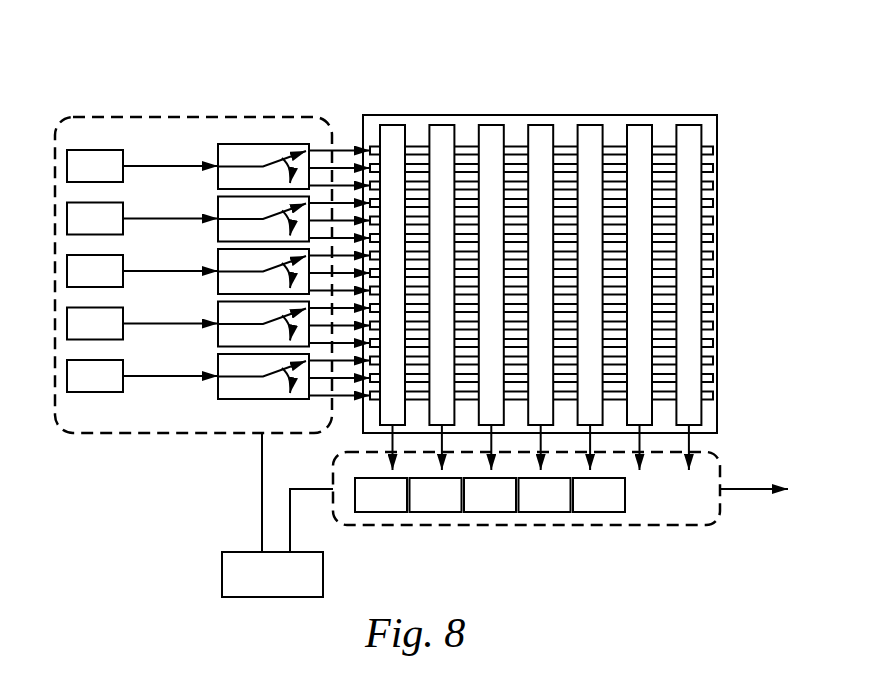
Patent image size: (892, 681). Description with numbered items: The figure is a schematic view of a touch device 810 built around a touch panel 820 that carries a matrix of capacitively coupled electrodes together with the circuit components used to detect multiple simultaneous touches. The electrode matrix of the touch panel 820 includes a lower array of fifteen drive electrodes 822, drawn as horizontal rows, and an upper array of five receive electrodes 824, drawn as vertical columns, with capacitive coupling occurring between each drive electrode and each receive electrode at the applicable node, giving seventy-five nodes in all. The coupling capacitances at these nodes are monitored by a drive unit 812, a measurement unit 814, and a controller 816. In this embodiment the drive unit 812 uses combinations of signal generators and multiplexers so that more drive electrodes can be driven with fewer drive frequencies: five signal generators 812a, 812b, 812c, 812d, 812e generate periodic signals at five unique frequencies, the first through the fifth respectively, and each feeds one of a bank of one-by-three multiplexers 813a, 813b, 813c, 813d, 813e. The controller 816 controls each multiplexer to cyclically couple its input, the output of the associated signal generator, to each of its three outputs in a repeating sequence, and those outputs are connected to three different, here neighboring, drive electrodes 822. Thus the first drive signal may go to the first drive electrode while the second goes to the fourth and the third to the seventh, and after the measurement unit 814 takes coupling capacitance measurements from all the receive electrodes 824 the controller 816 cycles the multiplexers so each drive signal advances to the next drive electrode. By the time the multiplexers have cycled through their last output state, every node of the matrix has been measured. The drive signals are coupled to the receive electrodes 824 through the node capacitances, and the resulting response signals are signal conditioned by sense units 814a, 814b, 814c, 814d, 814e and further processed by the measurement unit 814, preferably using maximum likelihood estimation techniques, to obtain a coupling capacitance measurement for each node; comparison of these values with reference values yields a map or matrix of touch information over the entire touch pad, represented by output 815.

The touch device 810 is at (722, 61).
The drive unit 812 is at (143, 117).
The signal generator 812a is at (95, 166).
The signal generator 812b is at (95, 219).
The signal generator 812c is at (95, 271).
The signal generator 812d is at (95, 324).
The signal generator 812e is at (95, 376).
The 1×3 multiplexer 813a is at (218, 157).
The 1×3 multiplexer 813b is at (218, 210).
The 1×3 multiplexer 813c is at (218, 262).
The 1×3 multiplexer 813d is at (218, 314).
The 1×3 multiplexer 813e is at (218, 367).
The measurement unit 814 is at (526, 504).
The sense unit 814a is at (381, 495).
The sense unit 814b is at (436, 495).
The sense unit 814c is at (490, 495).
The sense unit 814d is at (545, 495).
The sense unit 814e is at (599, 495).
The output 815 is at (740, 489).
The controller 816 is at (277, 515).
The touch panel 820 is at (577, 246).
The drive electrodes 822 is at (725, 145).
The receive electrodes 824 is at (539, 242).